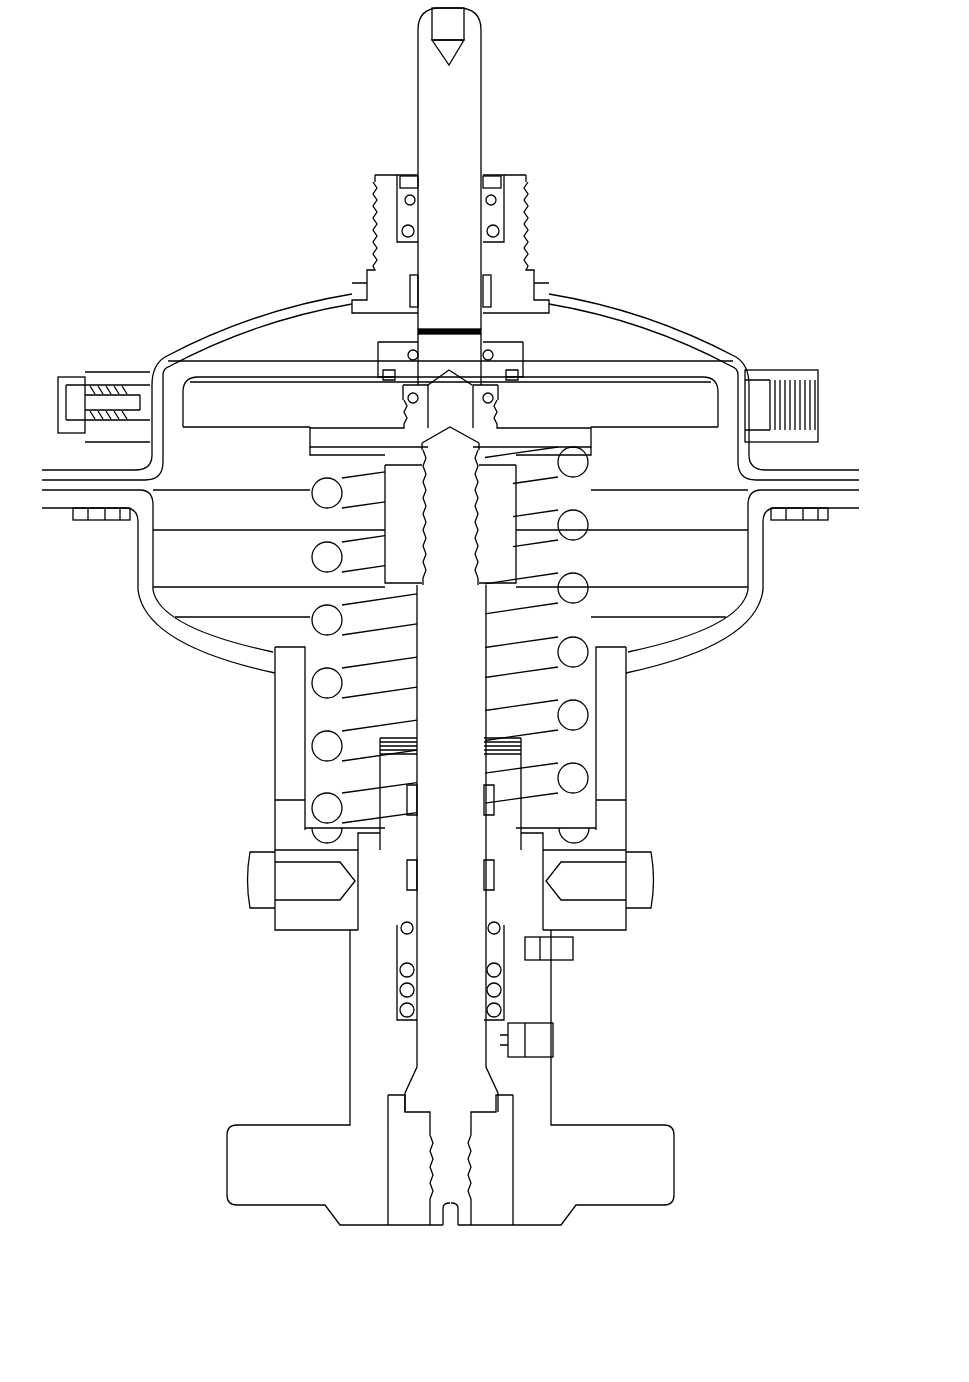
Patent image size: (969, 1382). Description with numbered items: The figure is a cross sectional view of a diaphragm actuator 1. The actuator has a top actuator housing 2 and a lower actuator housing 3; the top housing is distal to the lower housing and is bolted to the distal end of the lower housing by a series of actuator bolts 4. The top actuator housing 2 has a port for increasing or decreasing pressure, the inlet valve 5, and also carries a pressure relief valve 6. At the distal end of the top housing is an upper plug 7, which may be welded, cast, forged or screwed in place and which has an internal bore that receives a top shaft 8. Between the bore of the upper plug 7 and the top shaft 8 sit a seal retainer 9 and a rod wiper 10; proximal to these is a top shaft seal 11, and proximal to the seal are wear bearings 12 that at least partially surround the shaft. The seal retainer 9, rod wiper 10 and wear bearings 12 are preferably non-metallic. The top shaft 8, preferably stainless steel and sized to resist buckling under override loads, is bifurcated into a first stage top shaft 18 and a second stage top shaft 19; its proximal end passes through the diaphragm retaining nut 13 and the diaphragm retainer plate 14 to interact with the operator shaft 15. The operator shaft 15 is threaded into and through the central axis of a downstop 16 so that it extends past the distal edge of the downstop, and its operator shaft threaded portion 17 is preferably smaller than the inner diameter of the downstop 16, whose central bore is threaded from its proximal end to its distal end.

The diaphragm actuator 1 is at (451, 616).
The top actuator housing 2 is at (180, 350).
The lower actuator housing 3 is at (623, 775).
The actuator bolts 4 is at (806, 516).
The inlet valve 5 is at (790, 392).
The pressure relief valve 6 is at (76, 388).
The upper plug 7 is at (527, 290).
The top shaft 8 is at (468, 85).
The seal retainer 9 is at (405, 182).
The rod wiper 10 is at (412, 200).
The top shaft seal 11 is at (500, 232).
The wear bearings 12 is at (410, 290).
The diaphragm retaining nut 13 is at (385, 355).
The diaphragm retainer plate 14 is at (710, 402).
The operator shaft 15 is at (458, 600).
The downstop 16 is at (540, 455).
The operator shaft threaded portion 17 is at (430, 537).
The first stage top shaft 18 is at (460, 280).
The second stage top shaft 19 is at (465, 358).